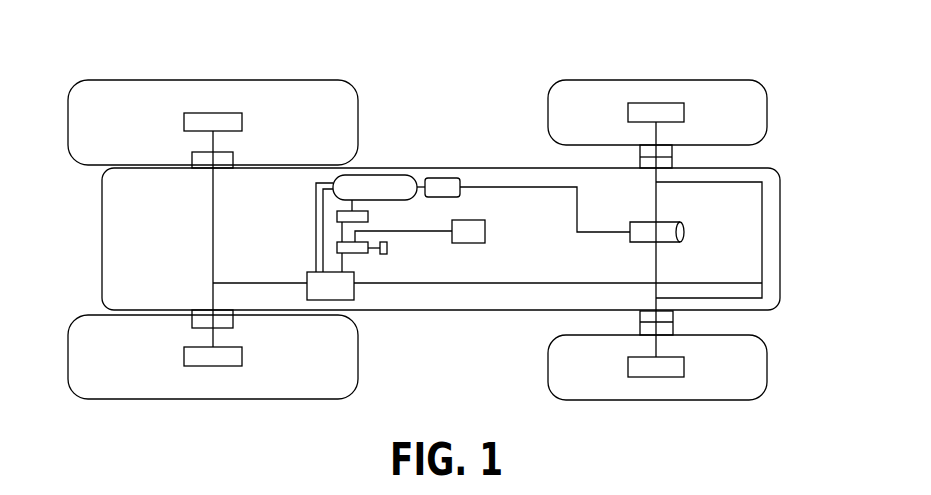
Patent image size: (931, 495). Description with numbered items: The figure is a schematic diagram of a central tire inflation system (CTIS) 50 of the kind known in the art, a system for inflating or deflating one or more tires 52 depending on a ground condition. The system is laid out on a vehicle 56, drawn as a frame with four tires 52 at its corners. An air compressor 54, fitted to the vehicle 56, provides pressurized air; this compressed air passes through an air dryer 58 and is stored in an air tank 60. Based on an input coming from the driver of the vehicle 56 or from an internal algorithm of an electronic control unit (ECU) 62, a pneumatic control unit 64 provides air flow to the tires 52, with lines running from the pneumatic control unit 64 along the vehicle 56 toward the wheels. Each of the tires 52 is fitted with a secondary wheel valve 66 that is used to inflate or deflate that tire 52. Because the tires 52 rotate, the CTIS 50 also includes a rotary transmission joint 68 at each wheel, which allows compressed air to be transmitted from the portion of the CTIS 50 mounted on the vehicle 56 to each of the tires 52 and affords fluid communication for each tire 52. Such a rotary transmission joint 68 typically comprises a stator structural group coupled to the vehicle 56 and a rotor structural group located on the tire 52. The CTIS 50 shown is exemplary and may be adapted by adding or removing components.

The central tire inflation system 50 is at (540, 52).
The tire 52 is at (110, 80).
The air compressor 54 is at (673, 222).
The vehicle 56 is at (790, 207).
The air dryer 58 is at (445, 178).
The air tank 60 is at (385, 175).
The electronic control unit 62 is at (337, 248).
The pneumatic control unit 64 is at (355, 293).
The secondary wheel valve 66 is at (242, 122).
The rotary transmission joint 68 is at (192, 157).